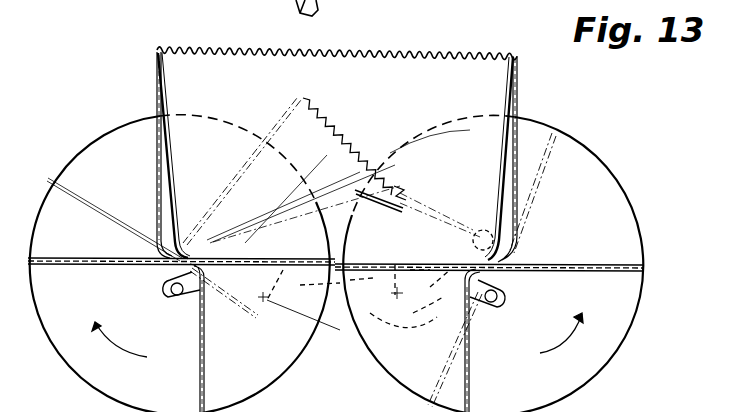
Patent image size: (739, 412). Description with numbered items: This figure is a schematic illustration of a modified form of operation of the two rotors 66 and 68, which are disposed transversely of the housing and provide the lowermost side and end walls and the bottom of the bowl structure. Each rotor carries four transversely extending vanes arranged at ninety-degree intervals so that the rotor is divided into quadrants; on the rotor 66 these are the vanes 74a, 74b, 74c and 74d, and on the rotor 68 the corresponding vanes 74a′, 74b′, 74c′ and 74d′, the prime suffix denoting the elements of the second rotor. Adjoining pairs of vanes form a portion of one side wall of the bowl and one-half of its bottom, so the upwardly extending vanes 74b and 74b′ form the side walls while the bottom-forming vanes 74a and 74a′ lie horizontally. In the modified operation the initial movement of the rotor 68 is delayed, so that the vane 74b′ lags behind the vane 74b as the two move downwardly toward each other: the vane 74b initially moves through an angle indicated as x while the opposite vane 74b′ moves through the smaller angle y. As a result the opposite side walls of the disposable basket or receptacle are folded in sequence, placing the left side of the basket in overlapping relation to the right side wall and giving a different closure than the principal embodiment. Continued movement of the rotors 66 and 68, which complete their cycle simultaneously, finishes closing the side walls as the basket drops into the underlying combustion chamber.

The rotor mechanism 66 is at (617, 181).
The rotor mechanism 68 is at (78, 153).
The vane 74a is at (587, 262).
The vane 74a′ is at (91, 258).
The vane 74b is at (498, 143).
The vane 74b′ is at (247, 153).
The vane 74c is at (454, 316).
The vane 74c′ is at (217, 305).
The vane 74d is at (474, 340).
The vane 74d′ is at (200, 390).